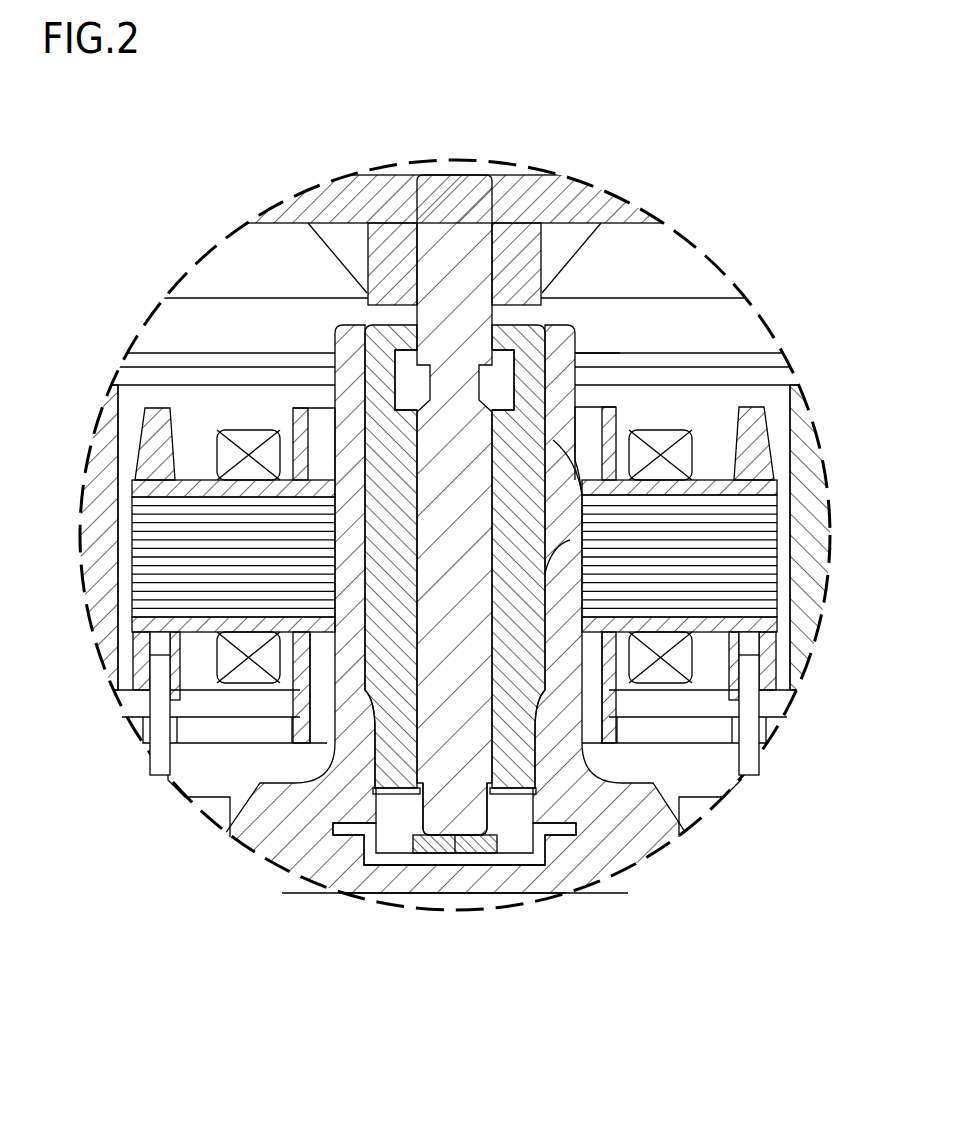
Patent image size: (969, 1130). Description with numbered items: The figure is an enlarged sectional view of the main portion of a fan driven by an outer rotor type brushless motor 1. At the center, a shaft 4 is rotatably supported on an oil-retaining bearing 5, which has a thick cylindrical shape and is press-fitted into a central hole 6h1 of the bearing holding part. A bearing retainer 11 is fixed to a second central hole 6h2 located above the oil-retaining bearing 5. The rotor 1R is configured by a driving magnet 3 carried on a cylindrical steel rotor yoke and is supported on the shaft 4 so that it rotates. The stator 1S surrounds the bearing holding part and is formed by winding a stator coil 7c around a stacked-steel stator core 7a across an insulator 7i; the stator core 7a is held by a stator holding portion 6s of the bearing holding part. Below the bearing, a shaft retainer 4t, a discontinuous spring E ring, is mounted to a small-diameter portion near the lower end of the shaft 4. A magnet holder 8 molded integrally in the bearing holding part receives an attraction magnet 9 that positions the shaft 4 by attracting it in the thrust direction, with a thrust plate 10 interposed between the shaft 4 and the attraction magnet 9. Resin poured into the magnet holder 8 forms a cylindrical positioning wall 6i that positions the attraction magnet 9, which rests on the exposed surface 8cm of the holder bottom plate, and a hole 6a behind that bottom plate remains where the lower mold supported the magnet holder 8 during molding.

The brushless motor 1 is at (313, 343).
The rotor 1R is at (782, 438).
The stator 1S is at (778, 559).
The driving magnet 3 is at (815, 505).
The shaft 4 is at (452, 197).
The shaft retainer 4t is at (373, 770).
The oil-retaining bearing 5 is at (387, 437).
The stator holding portion 6s is at (347, 573).
The cylindrical positioning wall 6i is at (540, 867).
The hole 6a is at (465, 893).
The central hole 6h1 is at (578, 470).
The central hole 6h2 is at (577, 357).
The stator core 7a is at (203, 527).
The stator coil 7c is at (247, 437).
The insulator 7i is at (178, 415).
The magnet holder 8 is at (498, 857).
The exposed surface 8cm is at (452, 873).
The attraction magnet 9 is at (392, 866).
The thrust plate 10 is at (560, 805).
The bearing retainer 11 is at (526, 358).